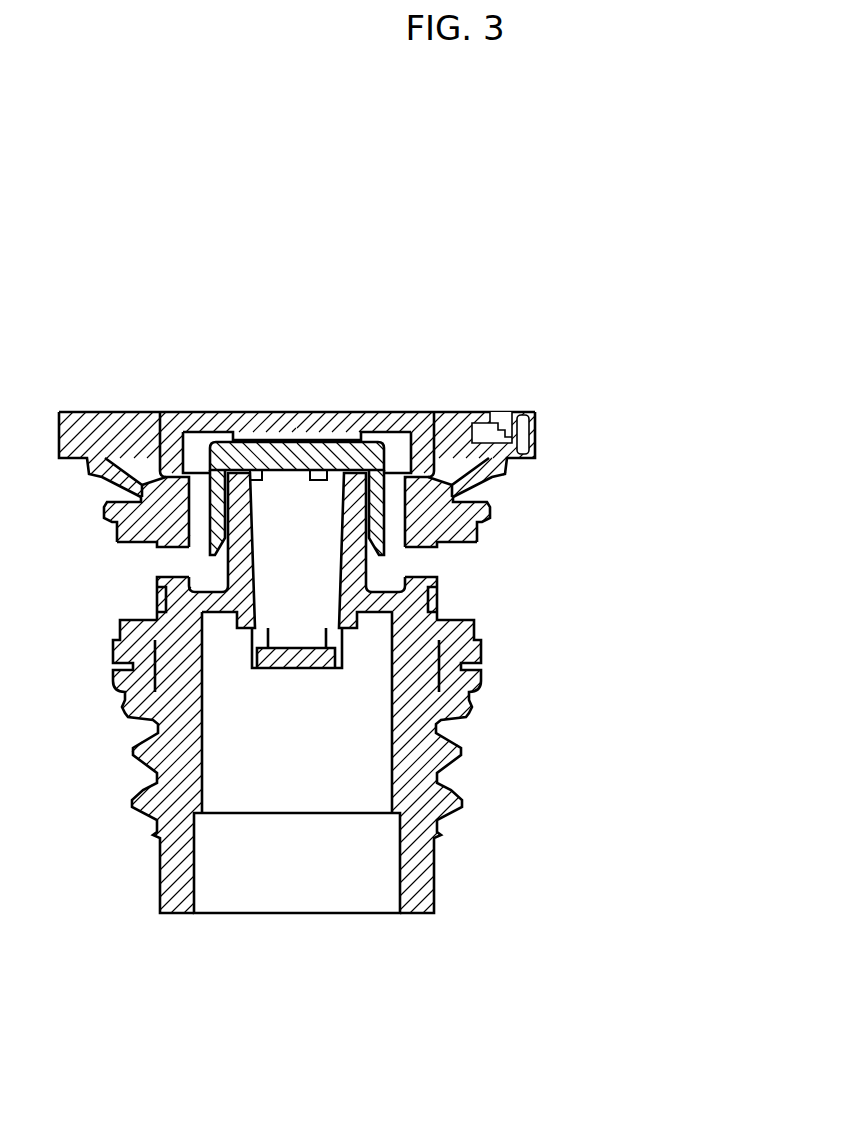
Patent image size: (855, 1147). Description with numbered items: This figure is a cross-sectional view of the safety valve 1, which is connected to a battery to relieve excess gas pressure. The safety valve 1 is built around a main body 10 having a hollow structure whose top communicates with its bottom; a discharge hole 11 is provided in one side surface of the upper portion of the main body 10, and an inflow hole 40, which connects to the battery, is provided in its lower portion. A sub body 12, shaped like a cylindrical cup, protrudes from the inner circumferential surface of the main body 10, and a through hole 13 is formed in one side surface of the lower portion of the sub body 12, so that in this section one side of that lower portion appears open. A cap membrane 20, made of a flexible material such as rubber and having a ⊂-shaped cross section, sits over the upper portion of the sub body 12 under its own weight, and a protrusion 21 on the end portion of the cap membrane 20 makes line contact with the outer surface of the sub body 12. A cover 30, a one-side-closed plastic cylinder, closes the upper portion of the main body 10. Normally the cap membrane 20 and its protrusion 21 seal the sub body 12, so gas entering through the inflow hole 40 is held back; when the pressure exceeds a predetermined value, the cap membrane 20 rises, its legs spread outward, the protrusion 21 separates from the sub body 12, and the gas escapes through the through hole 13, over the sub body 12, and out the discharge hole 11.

The safety valve 1 is at (469, 369).
The main body 10 is at (309, 724).
The discharge hole 11 is at (175, 563).
The sub body 12 is at (238, 608).
The through hole 13 is at (333, 640).
The cap membrane 20 is at (385, 506).
The protrusion 21 is at (363, 533).
The cover 30 is at (302, 413).
The inflow hole 40 is at (297, 800).